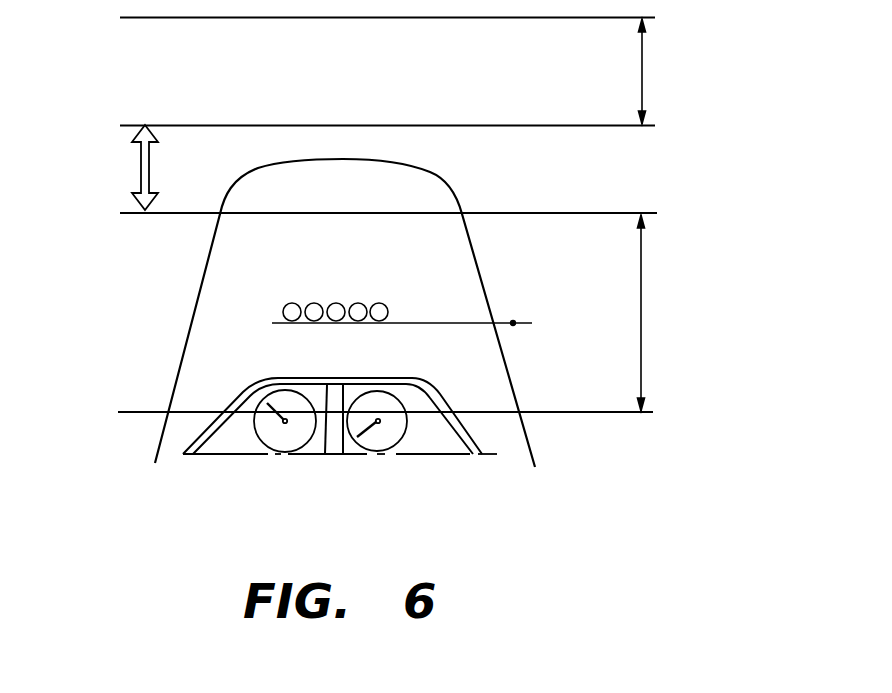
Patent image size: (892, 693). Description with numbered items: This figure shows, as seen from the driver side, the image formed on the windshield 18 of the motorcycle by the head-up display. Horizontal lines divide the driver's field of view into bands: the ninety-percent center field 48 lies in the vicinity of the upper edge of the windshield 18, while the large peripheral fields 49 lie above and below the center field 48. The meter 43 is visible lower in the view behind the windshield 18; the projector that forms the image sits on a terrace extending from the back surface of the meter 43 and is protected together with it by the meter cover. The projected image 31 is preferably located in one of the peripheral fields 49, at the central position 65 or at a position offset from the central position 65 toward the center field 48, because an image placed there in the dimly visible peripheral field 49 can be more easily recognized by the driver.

The windshield 18 is at (447, 183).
The image 31 is at (276, 308).
The meter 43 is at (365, 443).
The center field 48 is at (141, 167).
The peripheral fields 49 is at (642, 75).
The central position 65 is at (513, 323).